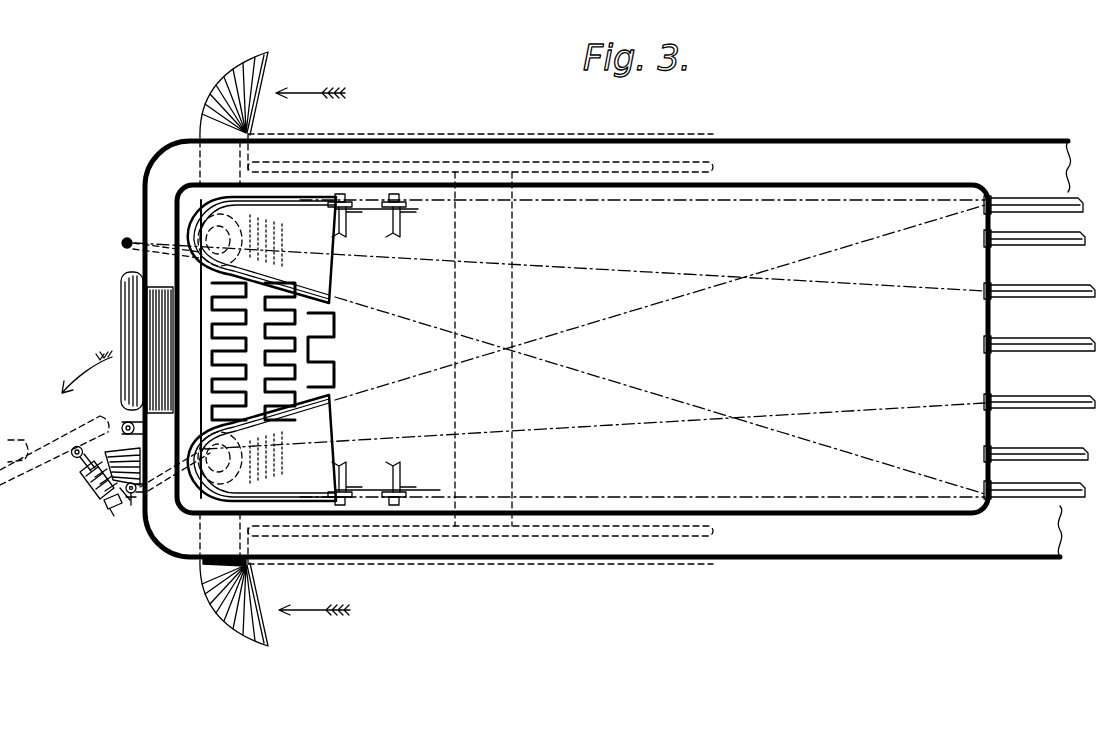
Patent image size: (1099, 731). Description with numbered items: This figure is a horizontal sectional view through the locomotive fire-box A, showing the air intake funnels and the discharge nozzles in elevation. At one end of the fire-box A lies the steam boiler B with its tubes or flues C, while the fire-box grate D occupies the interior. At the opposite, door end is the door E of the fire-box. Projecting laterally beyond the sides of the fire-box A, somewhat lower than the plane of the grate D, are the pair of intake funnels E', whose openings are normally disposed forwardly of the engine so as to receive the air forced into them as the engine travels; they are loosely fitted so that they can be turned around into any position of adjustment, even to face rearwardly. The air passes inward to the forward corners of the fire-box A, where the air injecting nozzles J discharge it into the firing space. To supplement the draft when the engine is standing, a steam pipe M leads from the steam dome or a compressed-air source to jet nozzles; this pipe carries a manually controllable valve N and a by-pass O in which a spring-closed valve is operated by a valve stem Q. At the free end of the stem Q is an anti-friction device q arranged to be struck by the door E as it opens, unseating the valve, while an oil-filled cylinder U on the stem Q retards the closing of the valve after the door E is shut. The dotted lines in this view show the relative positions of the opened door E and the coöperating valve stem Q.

The fire-box A is at (712, 352).
The steam boiler B is at (1039, 318).
The tubes or flues C is at (1047, 240).
The fire-box grate D is at (305, 349).
The door of the fire-box E is at (86, 378).
The intake funnels E' is at (259, 349).
The air injecting nozzles J is at (330, 286).
The steam pipe M is at (125, 239).
The manually controllable valve N is at (134, 497).
The by-pass O is at (112, 505).
The valve stem Q is at (91, 474).
The anti-friction device q is at (76, 458).
The cylinder U is at (101, 497).